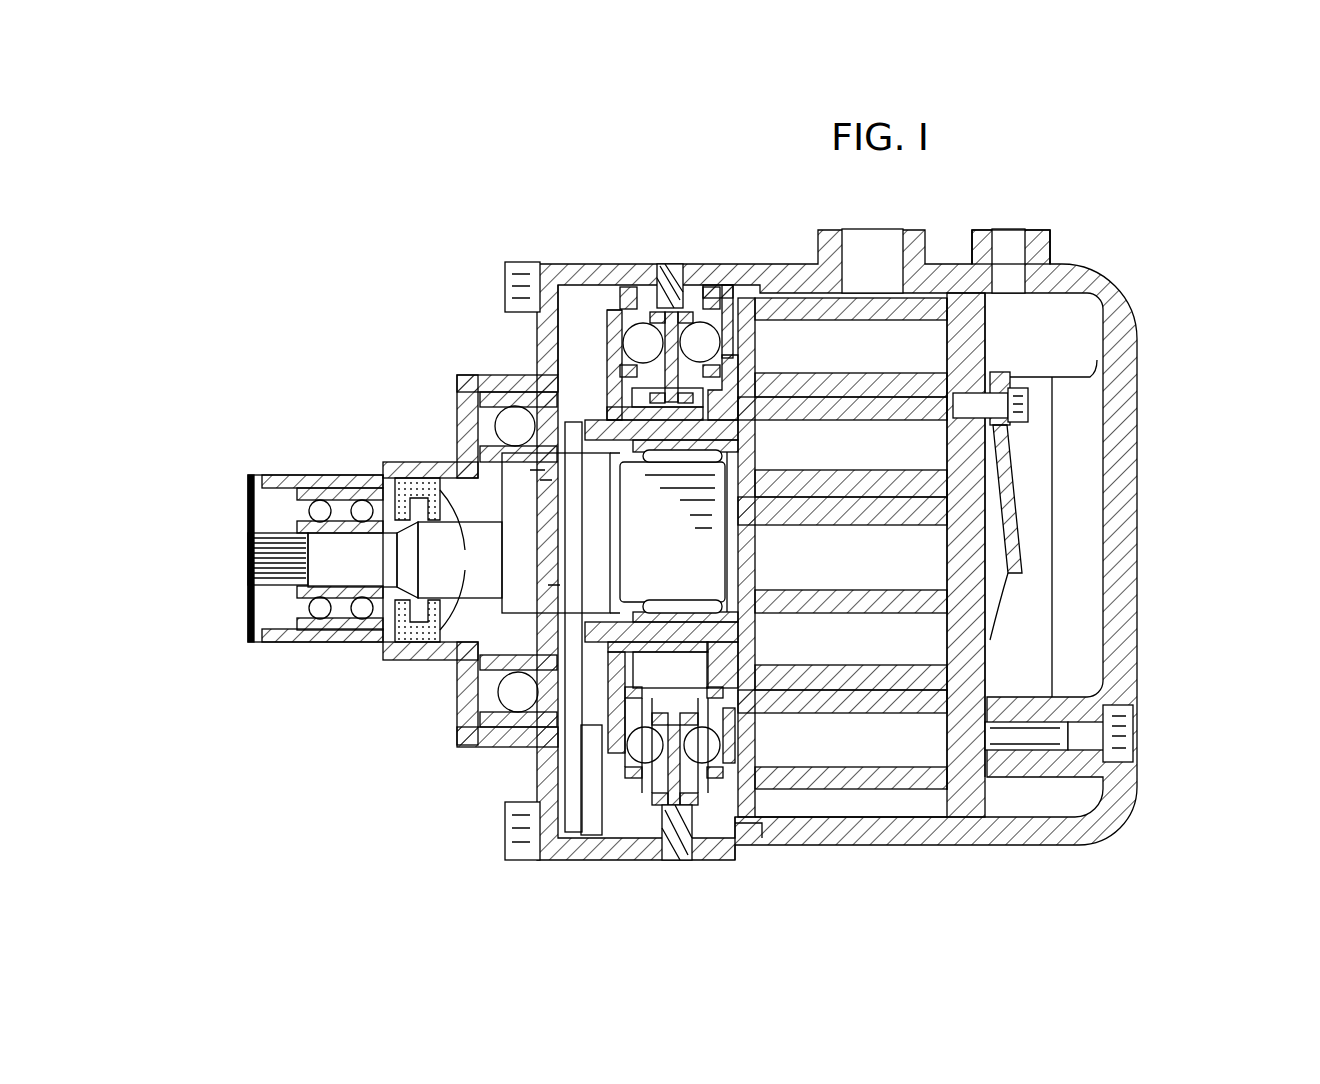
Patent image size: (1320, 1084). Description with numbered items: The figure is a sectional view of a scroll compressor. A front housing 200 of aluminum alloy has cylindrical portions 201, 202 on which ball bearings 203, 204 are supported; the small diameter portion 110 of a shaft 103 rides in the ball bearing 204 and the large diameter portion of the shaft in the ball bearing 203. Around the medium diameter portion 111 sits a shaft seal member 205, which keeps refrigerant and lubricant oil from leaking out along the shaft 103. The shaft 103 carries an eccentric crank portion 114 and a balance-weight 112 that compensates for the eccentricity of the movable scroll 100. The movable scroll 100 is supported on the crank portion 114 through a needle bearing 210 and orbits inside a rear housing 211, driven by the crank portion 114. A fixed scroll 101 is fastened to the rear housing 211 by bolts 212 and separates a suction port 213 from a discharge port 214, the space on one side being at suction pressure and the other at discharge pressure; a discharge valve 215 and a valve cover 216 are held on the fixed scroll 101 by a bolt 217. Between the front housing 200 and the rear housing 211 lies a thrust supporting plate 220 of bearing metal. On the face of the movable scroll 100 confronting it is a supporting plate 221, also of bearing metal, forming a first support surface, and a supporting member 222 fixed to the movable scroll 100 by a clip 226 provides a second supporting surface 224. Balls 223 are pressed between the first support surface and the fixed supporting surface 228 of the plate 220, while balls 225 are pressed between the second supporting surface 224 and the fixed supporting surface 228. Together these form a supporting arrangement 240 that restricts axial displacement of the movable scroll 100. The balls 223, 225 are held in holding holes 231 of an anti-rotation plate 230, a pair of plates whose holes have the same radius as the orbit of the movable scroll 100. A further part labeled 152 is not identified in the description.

The movable scroll 100 is at (985, 293).
The fixed scroll 101 is at (970, 325).
The shaft 103 is at (405, 635).
The small diameter portion 110 is at (520, 540).
The medium diameter portion 111 is at (300, 555).
The balance-weight 112 is at (512, 842).
The crank portion 114 is at (653, 517).
The end cavity 152 is at (1078, 682).
The front housing 200 is at (591, 800).
The cylindrical portion 201 is at (500, 748).
The cylindrical portion 202 is at (335, 642).
The ball bearing 203 is at (518, 692).
The ball bearing 204 is at (290, 603).
The shaft seal member 205 is at (420, 628).
The needle bearing 210 is at (818, 818).
The rear housing 211 is at (920, 843).
The bolts 212 is at (1130, 742).
The suction port 213 is at (990, 347).
The discharge port 214 is at (1010, 248).
The discharge valve 215 is at (1008, 480).
The valve cover 216 is at (1015, 548).
The bolt 217 is at (1028, 402).
The thrust supporting plate 220 is at (702, 753).
The supporting plate 221 is at (812, 266).
The supporting member 222 is at (600, 395).
The balls 223 is at (738, 842).
The second supporting surface 224 is at (612, 300).
The balls 225 is at (662, 800).
The clip 226 is at (540, 395).
The fixed supporting surface 228 is at (700, 325).
The anti-rotation plate 230 is at (645, 753).
The holding holes 231 is at (643, 335).
The supporting arrangement 240 is at (660, 292).